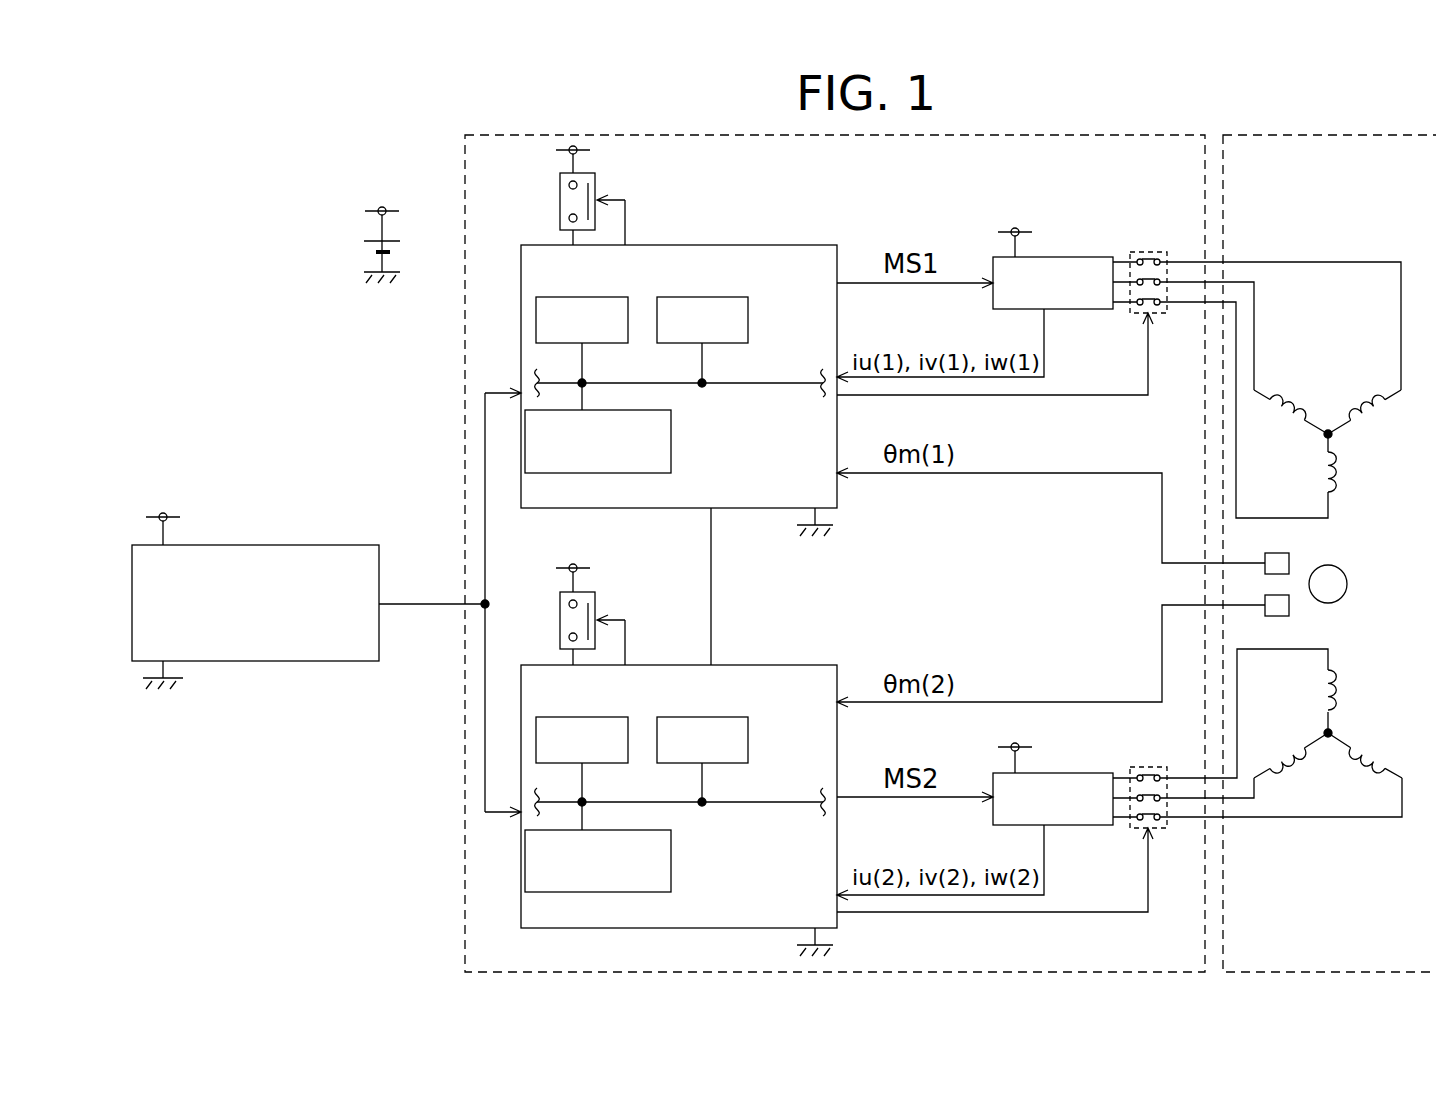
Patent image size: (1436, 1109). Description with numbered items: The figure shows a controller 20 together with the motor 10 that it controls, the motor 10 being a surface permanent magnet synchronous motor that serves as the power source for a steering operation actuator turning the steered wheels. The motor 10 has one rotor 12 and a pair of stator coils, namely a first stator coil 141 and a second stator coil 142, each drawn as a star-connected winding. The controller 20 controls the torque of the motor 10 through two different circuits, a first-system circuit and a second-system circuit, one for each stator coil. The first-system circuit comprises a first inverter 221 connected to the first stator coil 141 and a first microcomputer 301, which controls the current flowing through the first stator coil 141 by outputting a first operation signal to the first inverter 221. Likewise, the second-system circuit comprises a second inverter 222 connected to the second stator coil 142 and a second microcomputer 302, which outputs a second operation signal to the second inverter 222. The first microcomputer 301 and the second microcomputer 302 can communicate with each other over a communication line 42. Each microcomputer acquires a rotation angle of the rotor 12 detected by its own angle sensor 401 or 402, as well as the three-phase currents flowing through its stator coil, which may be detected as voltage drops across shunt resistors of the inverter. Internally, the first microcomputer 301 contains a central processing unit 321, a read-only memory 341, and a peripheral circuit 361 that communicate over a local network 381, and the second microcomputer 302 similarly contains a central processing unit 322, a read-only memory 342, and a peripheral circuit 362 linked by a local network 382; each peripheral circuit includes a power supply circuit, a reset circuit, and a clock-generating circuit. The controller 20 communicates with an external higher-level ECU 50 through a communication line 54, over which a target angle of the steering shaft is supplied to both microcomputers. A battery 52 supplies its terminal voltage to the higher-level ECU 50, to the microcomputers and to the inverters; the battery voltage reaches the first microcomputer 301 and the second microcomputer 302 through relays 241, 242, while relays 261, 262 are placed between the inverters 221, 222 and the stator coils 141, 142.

The motor 10 is at (1352, 134).
The rotor 12 is at (1347, 584).
The controller 20 is at (1143, 132).
The communication line 42 is at (711, 570).
The higher-level ECU 50 is at (300, 545).
The battery 52 is at (372, 241).
The communication line 54 is at (440, 606).
The first stator coil 141 is at (1365, 446).
The second stator coil 142 is at (1365, 721).
The first inverter 221 is at (1073, 257).
The second inverter 222 is at (1050, 773).
The relay 241 is at (597, 190).
The relay 242 is at (597, 610).
The relay 261 is at (1140, 252).
The relay 262 is at (1140, 767).
The first microcomputer 301 is at (752, 245).
The second microcomputer 302 is at (752, 665).
The central processing unit 321 is at (556, 297).
The central processing unit 322 is at (556, 717).
The read-only memory 341 is at (692, 297).
The read-only memory 342 is at (692, 717).
The peripheral circuit 361 is at (671, 445).
The peripheral circuit 362 is at (671, 865).
The local network 381 is at (712, 383).
The local network 382 is at (712, 802).
The angle sensor 401 is at (1289, 553).
The angle sensor 402 is at (1289, 616).